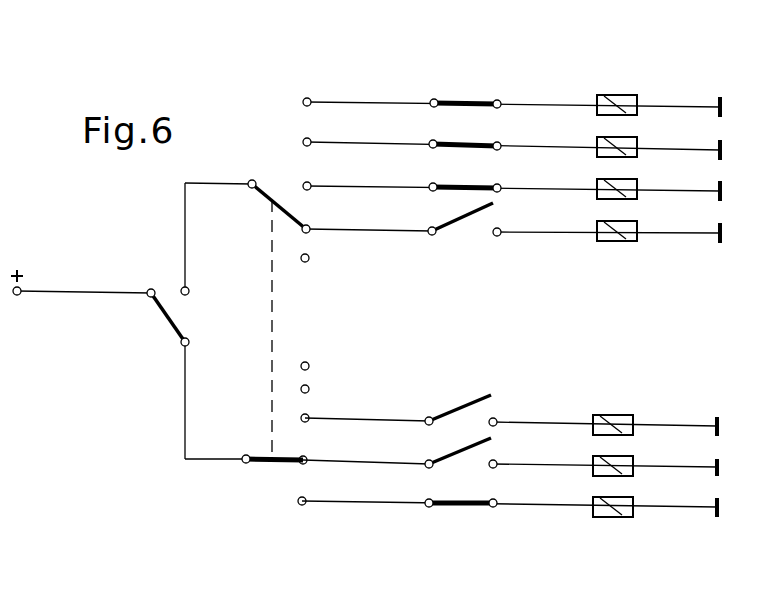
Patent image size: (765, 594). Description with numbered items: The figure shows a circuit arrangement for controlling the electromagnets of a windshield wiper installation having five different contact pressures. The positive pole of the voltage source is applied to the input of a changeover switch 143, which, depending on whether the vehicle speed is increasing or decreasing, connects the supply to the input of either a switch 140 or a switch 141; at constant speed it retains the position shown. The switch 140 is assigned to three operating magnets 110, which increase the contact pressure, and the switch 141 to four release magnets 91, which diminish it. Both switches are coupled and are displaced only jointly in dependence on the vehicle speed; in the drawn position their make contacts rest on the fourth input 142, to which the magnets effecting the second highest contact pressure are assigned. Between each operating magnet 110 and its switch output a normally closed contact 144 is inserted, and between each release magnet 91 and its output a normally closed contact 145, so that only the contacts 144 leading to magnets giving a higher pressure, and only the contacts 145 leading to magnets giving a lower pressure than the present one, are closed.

The release magnet 91 is at (601, 96).
The operating magnet 110 is at (613, 416).
The switch 140 is at (262, 486).
The switch 141 is at (277, 171).
The fourth input 142 is at (309, 230).
The changeover switch 143 is at (149, 340).
The normally closed contact 144 is at (464, 380).
The normally closed contact 145 is at (470, 78).